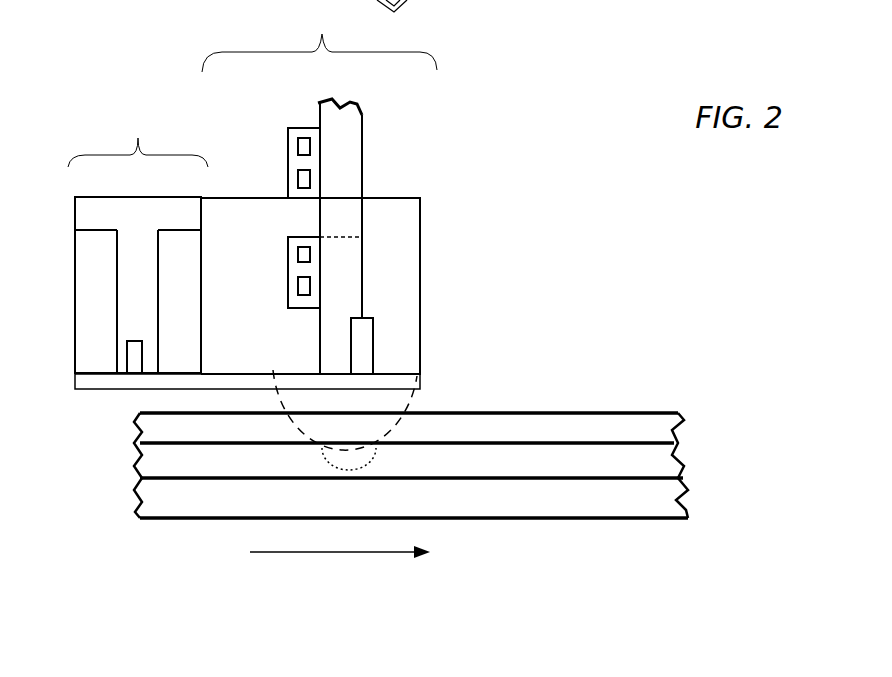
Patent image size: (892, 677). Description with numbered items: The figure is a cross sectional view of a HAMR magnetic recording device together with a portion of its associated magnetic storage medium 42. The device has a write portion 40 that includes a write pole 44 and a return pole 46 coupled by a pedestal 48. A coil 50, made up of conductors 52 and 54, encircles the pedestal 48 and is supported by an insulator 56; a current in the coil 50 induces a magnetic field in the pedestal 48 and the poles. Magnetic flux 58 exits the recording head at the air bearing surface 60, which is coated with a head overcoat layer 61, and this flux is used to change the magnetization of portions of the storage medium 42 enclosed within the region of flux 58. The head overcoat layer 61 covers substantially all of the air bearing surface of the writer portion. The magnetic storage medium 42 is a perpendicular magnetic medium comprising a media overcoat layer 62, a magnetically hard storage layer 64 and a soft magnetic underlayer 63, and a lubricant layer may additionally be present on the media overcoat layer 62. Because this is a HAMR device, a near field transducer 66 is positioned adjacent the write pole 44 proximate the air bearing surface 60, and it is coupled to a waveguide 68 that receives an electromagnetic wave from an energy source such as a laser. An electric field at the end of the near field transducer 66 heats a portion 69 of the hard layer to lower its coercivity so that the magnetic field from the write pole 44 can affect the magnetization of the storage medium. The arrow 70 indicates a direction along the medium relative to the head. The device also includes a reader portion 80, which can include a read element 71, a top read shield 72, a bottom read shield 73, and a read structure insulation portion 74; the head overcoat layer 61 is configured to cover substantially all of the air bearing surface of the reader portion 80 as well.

The write portion 40 is at (319, 39).
The magnetic storage medium 42 is at (433, 468).
The write pole 44 is at (399, 241).
The return pole 46 is at (202, 315).
The pedestal 48 is at (345, 218).
The coil 50 is at (270, 126).
The conductors 52 is at (297, 287).
The conductors 54 is at (297, 182).
The insulator 56 is at (295, 135).
The magnetic flux 58 is at (421, 404).
The air bearing surface 60 is at (118, 390).
The head overcoat layer 61 is at (398, 383).
The media overcoat layer 62 is at (638, 437).
The soft magnetic underlayer 63 is at (520, 495).
The magnetically hard storage layer 64 is at (632, 458).
The near field transducer 66 is at (368, 338).
The waveguide 68 is at (338, 165).
The heated portion 69 is at (350, 450).
The direction of travel 70 is at (340, 564).
The read element 71 is at (137, 365).
The top read shield 72 is at (82, 285).
The bottom read shield 73 is at (165, 353).
The read structure insulation portion 74 is at (124, 227).
The reader portion 80 is at (125, 272).